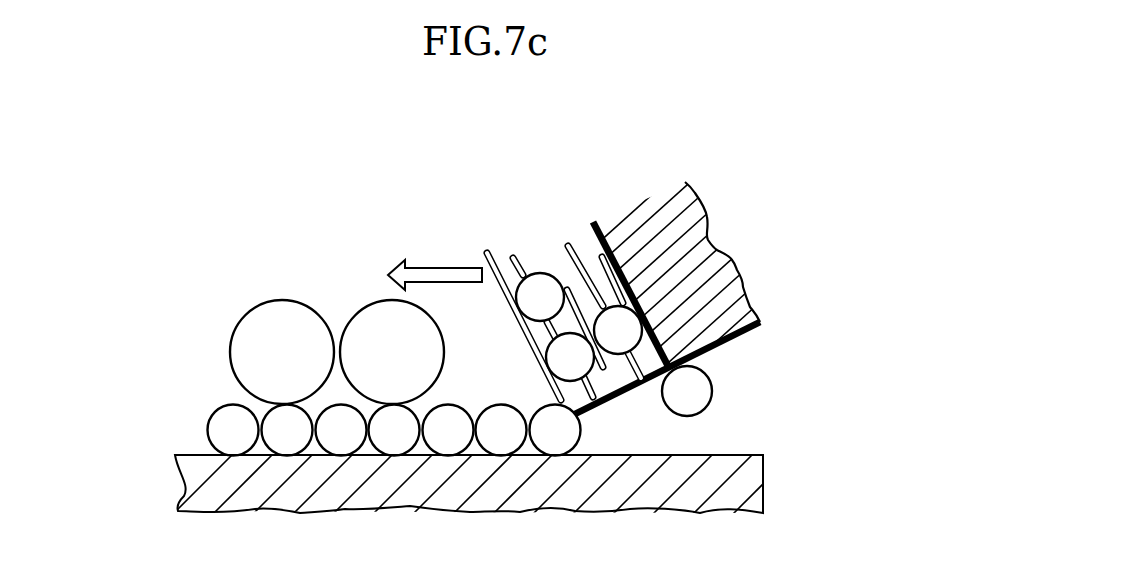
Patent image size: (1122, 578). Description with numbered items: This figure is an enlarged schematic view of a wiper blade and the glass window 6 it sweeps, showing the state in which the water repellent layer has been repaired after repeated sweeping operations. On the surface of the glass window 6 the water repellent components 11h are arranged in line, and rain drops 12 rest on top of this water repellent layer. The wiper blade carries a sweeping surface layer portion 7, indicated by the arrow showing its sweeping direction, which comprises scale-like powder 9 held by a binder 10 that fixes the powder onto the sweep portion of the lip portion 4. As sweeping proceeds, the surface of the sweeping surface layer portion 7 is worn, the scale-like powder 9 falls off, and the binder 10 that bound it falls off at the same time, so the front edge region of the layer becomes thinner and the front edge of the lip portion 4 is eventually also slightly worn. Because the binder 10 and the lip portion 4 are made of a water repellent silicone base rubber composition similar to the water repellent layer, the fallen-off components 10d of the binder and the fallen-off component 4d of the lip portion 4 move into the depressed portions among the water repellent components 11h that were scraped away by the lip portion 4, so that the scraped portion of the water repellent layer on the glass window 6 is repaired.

The lip portion 4 is at (717, 270).
The fallen-off component of the lip portion 4d is at (702, 390).
The glass window 6 is at (752, 482).
The sweeping surface layer portion 7 is at (448, 245).
The scale-like powder 9 is at (491, 256).
The binder 10 is at (545, 285).
The fallen-off component of the binder 10d is at (345, 445).
The water repellent component 11h is at (222, 420).
The rain drop 12 is at (252, 328).